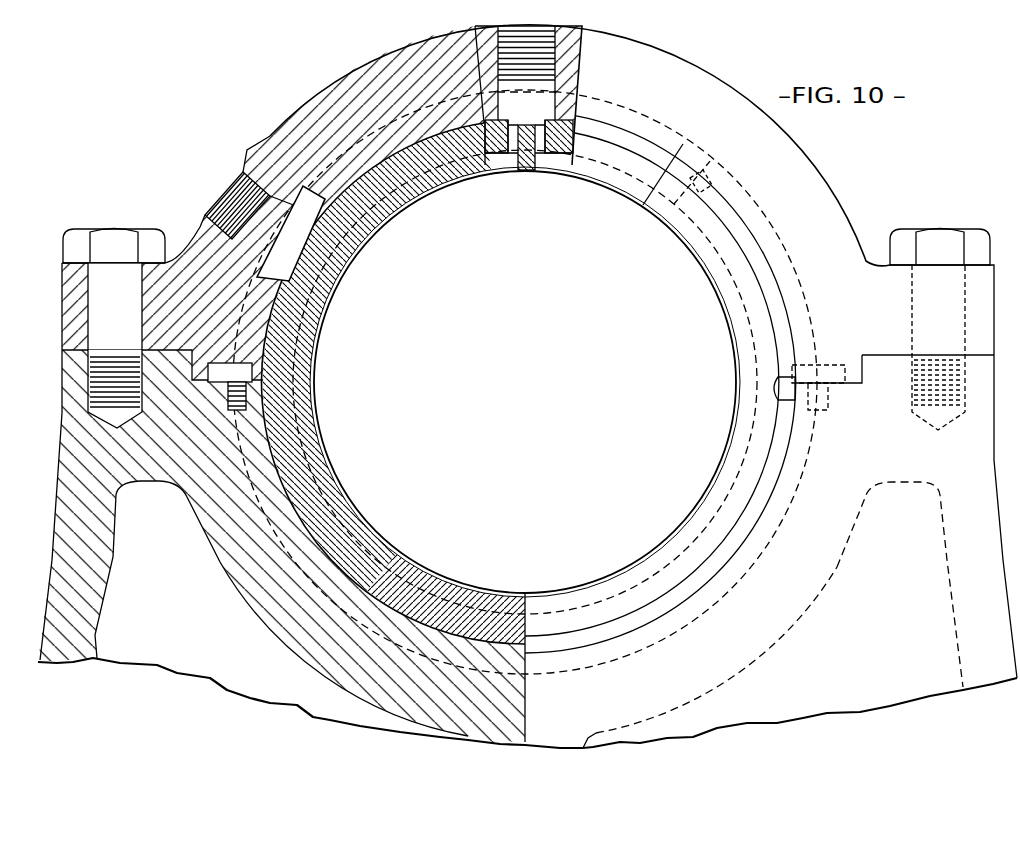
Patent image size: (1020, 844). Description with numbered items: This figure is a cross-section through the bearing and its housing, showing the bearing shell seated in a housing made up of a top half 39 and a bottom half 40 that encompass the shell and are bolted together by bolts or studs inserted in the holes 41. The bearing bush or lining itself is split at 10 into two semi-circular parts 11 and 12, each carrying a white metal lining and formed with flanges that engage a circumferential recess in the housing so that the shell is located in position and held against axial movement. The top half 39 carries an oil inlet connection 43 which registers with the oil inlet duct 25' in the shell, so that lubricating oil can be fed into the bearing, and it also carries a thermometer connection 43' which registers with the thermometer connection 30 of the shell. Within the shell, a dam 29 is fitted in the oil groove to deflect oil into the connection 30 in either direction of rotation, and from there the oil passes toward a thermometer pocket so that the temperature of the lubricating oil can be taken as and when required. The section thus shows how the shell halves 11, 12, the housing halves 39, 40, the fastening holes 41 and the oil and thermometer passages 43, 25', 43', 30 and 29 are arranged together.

The split 10 is at (648, 198).
The semi-circular part 11 is at (598, 174).
The semi-circular part 12 is at (665, 575).
The oil inlet duct 25' is at (321, 233).
The dam 29 is at (524, 171).
The connection 30 is at (527, 120).
The top half 39 is at (332, 88).
The bottom half 40 is at (85, 506).
The holes 41 is at (115, 313).
The oil inlet connection 43 is at (230, 204).
The thermometer connection 43' is at (563, 55).